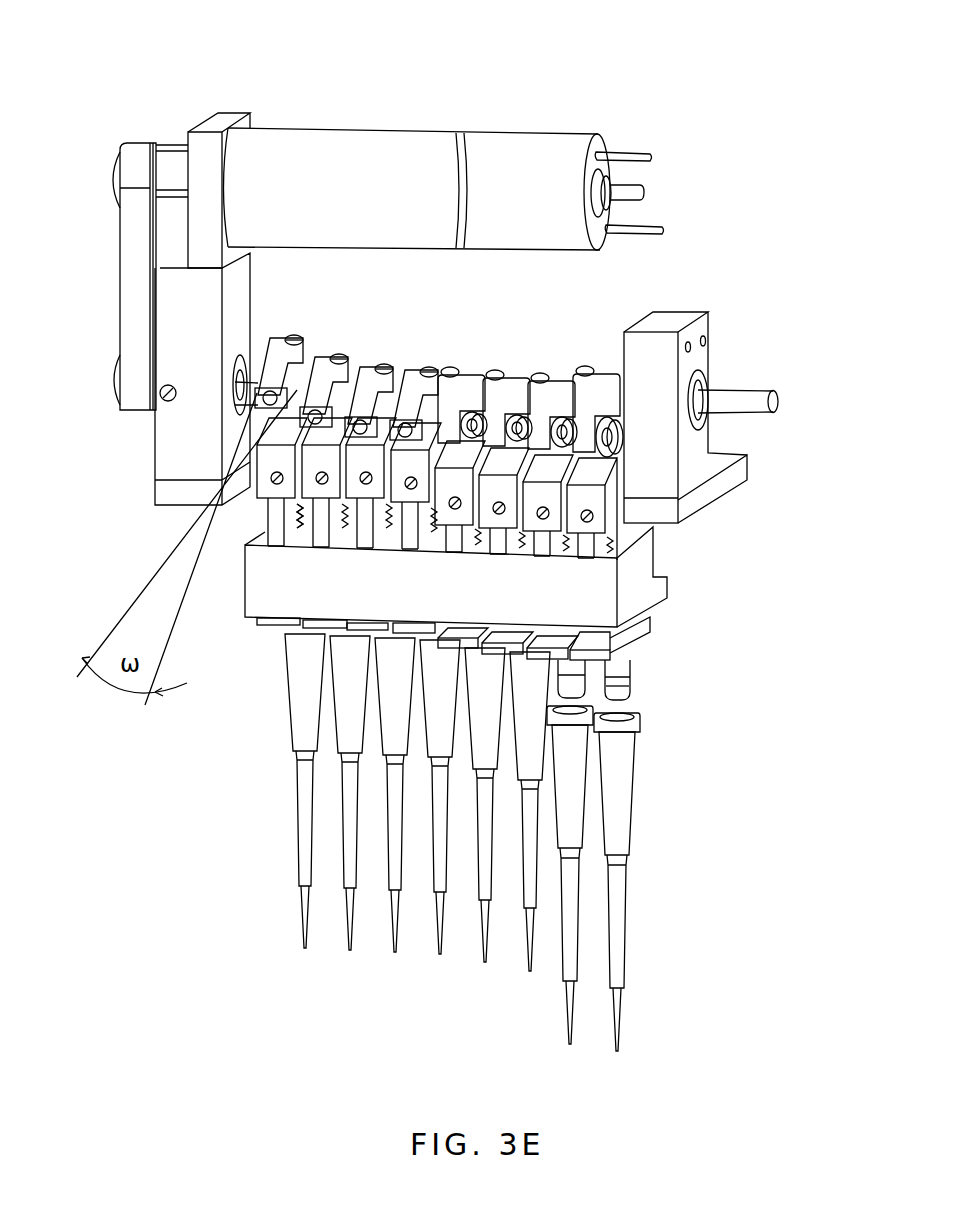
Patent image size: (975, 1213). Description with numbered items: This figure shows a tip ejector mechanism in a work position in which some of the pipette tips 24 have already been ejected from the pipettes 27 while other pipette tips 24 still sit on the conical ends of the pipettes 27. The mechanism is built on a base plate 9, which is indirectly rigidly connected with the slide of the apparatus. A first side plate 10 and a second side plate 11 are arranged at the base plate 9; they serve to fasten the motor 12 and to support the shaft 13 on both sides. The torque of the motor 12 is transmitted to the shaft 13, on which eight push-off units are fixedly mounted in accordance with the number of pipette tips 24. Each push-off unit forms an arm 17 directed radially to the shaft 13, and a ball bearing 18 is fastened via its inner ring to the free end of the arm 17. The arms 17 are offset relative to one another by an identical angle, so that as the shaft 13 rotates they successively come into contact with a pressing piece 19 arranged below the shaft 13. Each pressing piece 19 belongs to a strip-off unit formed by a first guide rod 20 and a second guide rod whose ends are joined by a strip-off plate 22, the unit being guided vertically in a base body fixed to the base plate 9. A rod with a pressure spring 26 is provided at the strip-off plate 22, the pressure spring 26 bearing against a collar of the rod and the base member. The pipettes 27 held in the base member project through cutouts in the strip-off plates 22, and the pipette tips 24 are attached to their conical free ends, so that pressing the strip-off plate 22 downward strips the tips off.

The base plate 9 is at (727, 477).
The first side plate 10 is at (655, 358).
The second side plate 11 is at (178, 312).
The motor 12 is at (540, 166).
The shaft 13 is at (750, 397).
The arm 17 is at (597, 403).
The ball bearing 18 is at (620, 460).
The pressing piece 19 is at (593, 502).
The first guide rod 20 is at (617, 668).
The strip-off plate 22 is at (650, 632).
The pipette tip 24 is at (622, 802).
The pressure spring 26 is at (297, 543).
The pipette 27 is at (626, 680).